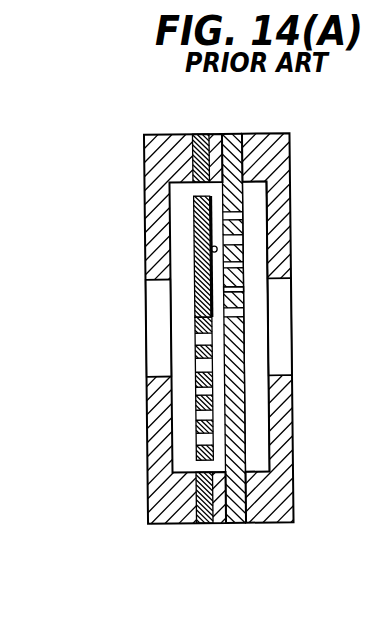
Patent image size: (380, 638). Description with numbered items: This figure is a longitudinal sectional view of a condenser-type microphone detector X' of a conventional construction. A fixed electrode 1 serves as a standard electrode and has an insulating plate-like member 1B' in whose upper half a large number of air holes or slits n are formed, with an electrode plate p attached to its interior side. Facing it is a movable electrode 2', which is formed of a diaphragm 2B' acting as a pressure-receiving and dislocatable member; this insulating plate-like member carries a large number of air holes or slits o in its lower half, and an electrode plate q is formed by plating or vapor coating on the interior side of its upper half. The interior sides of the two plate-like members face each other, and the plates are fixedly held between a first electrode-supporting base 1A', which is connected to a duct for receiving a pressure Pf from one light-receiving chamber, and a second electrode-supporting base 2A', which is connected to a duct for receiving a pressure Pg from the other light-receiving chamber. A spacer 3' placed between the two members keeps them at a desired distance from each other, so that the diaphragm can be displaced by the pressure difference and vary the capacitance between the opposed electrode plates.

The fixed electrode 1 is at (310, 327).
The first electrode-supporting base 1A' is at (297, 327).
The insulating plate-like member 1B' is at (297, 326).
The movable electrode 2' is at (126, 329).
The second electrode-supporting base 2A' is at (148, 329).
The diaphragm 2B' is at (141, 328).
The spacer 3' is at (239, 366).
The electrode plate q is at (210, 254).
The condenser-type microphone detector X' is at (319, 224).
The air holes or slits n is at (238, 266).
The electrode plate p is at (240, 288).
The pressure from the other light-receiving chamber Pg is at (135, 327).
The pressure from one light-receiving chamber Pf is at (302, 325).
The air holes or slits o is at (202, 438).